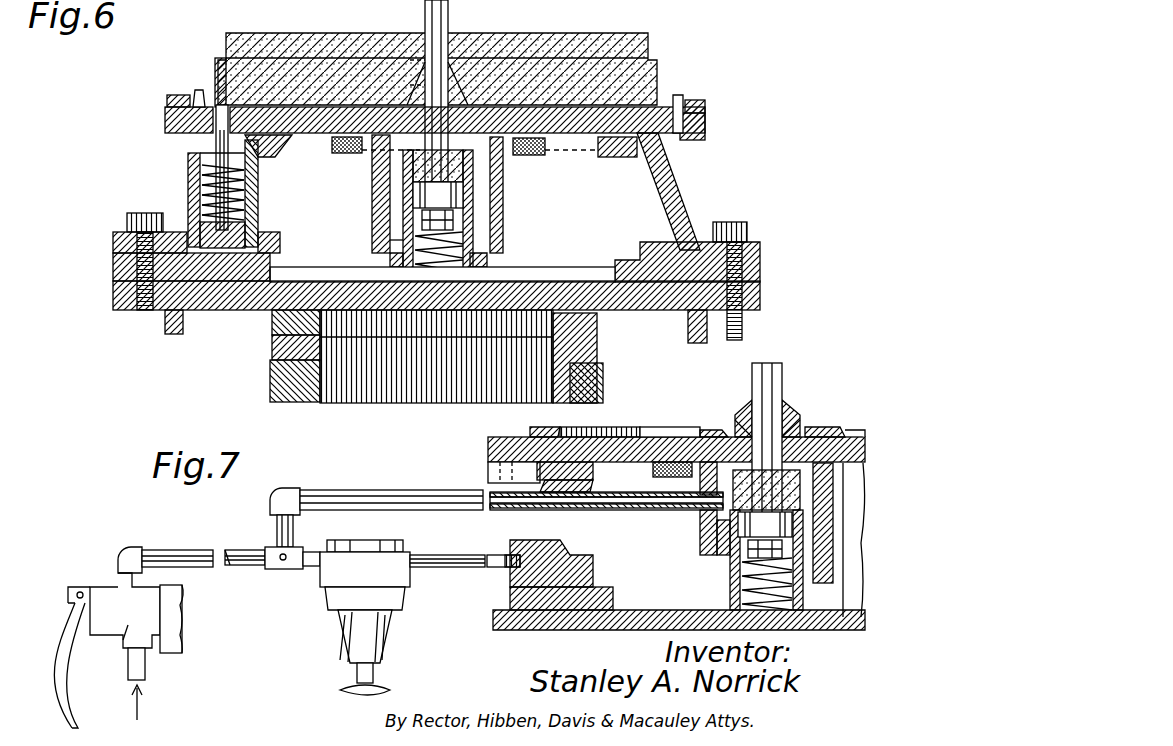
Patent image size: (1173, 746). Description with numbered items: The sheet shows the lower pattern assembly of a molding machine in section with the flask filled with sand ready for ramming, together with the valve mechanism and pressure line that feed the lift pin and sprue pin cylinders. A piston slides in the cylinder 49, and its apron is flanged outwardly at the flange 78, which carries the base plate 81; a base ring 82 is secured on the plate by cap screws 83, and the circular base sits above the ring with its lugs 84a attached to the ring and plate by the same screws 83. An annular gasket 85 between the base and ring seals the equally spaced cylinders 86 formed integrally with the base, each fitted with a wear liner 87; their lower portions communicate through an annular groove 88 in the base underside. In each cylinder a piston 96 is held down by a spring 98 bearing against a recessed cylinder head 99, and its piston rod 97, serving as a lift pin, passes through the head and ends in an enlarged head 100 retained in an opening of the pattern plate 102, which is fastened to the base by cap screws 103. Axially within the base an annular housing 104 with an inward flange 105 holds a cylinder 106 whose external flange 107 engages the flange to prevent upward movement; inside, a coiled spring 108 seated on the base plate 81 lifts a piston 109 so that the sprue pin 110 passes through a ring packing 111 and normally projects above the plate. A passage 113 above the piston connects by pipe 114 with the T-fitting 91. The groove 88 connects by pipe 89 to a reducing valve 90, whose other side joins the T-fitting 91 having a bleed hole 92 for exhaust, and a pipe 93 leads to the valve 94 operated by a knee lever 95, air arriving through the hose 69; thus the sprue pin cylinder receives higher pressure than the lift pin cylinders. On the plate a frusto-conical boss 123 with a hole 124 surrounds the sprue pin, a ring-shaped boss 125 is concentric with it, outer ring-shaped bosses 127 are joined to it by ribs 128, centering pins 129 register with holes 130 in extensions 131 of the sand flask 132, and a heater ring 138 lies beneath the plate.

In FIG. 6, the cylinder 49 is at (272, 378).
In FIG. 7, the hose 69 is at (145, 672).
In FIG. 6, the flange 78 is at (300, 348).
In FIG. 6, the base plate 81 is at (125, 302).
In FIG. 6, the base ring 82 is at (118, 264).
In FIG. 6, the cap screws 83 is at (140, 213).
In FIG. 6, the lugs 84a is at (128, 220).
In FIG. 6, the annular gasket 85 is at (698, 242).
In FIG. 6, the cylinders 86 is at (188, 165).
In FIG. 6, the wear liners 87 is at (200, 183).
In FIG. 6, the annular groove 88 is at (650, 248).
In FIG. 7, the annular groove 88 is at (530, 625).
In FIG. 7, the pipe 89 is at (462, 568).
In FIG. 7, the reducing valve 90 is at (345, 635).
In FIG. 7, the T-fitting 91 is at (278, 570).
In FIG. 7, the bleed hole 92 is at (287, 556).
In FIG. 7, the pipe 93 is at (200, 550).
In FIG. 7, the valve 94 is at (103, 630).
In FIG. 7, the knee lever 95 is at (60, 700).
In FIG. 6, the piston 96 is at (258, 232).
In FIG. 6, the piston rod 97 is at (245, 190).
In FIG. 6, the spring 98 is at (245, 212).
In FIG. 6, the cylinder head 99 is at (265, 150).
In FIG. 6, the head 100 is at (215, 122).
In FIG. 6, the pattern plate 102 is at (705, 133).
In FIG. 7, the cap screws 103 is at (500, 470).
In FIG. 6, the annular housing 104 is at (473, 195).
In FIG. 6, the flange 105 is at (392, 240).
In FIG. 6, the cylinder 106 is at (455, 218).
In FIG. 7, the cylinder 106 is at (700, 590).
In FIG. 6, the annular external flange 107 is at (488, 272).
In FIG. 6, the coiled spring 108 is at (445, 262).
In FIG. 7, the coiled spring 108 is at (780, 590).
In FIG. 6, the piston 109 is at (403, 205).
In FIG. 7, the piston 109 is at (738, 530).
In FIG. 6, the sprue pin 110 is at (440, 50).
In FIG. 7, the sprue pin 110 is at (785, 372).
In FIG. 6, the ring packing 111 is at (372, 163).
In FIG. 7, the passage 113 is at (720, 535).
In FIG. 7, the pipe 114 is at (380, 500).
In FIG. 6, the frusto-conical boss 123 is at (470, 65).
In FIG. 7, the frusto-conical boss 123 is at (785, 420).
In FIG. 7, the hole 124 is at (750, 420).
In FIG. 6, the ring-shaped boss 125 is at (383, 100).
In FIG. 7, the ring-shaped boss 125 is at (762, 425).
In FIG. 7, the ring-shaped bosses 127 is at (662, 437).
In FIG. 7, the rib 128 is at (710, 432).
In FIG. 6, the centering pins 129 is at (196, 88).
In FIG. 6, the holes 130 is at (190, 100).
In FIG. 6, the extensions 131 is at (705, 120).
In FIG. 6, the sand flask 132 is at (660, 73).
In FIG. 6, the heater ring 138 is at (530, 155).